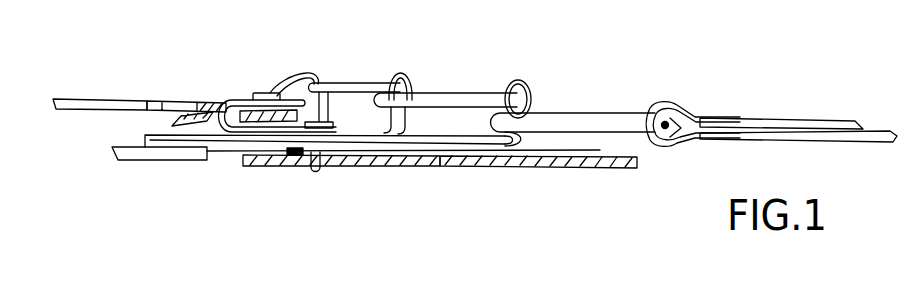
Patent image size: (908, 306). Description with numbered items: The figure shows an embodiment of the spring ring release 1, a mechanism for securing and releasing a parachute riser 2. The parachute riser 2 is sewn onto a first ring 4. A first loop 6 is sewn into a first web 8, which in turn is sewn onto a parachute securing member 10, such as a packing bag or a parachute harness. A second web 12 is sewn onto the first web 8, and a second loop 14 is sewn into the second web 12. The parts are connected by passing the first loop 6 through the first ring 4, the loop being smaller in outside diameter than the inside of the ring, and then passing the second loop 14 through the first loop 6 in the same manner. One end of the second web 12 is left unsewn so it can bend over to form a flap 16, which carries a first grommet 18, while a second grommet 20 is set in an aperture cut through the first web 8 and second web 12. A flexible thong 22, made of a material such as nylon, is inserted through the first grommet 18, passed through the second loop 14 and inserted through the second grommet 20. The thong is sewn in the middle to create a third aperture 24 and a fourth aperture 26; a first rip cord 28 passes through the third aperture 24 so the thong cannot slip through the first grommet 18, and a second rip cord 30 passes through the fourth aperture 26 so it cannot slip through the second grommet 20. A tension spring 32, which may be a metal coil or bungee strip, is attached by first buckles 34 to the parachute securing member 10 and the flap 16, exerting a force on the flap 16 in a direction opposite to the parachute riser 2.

The spring ring release 1 is at (470, 238).
The parachute riser 2 is at (750, 120).
The first ring 4 is at (573, 114).
The first loop 6 is at (467, 98).
The first web 8 is at (527, 138).
The parachute securing member 10 is at (132, 161).
The second web 12 is at (408, 122).
The second loop 14 is at (360, 83).
The flap 16 is at (240, 100).
The first grommet 18 is at (258, 93).
The second grommet 20 is at (280, 167).
The flexible thong 22 is at (308, 71).
The third aperture 24 is at (254, 128).
The fourth aperture 26 is at (320, 172).
The first rip cord 28 is at (173, 122).
The second rip cord 30 is at (627, 166).
The tension spring 32 is at (85, 100).
The first buckles 34 is at (173, 102).